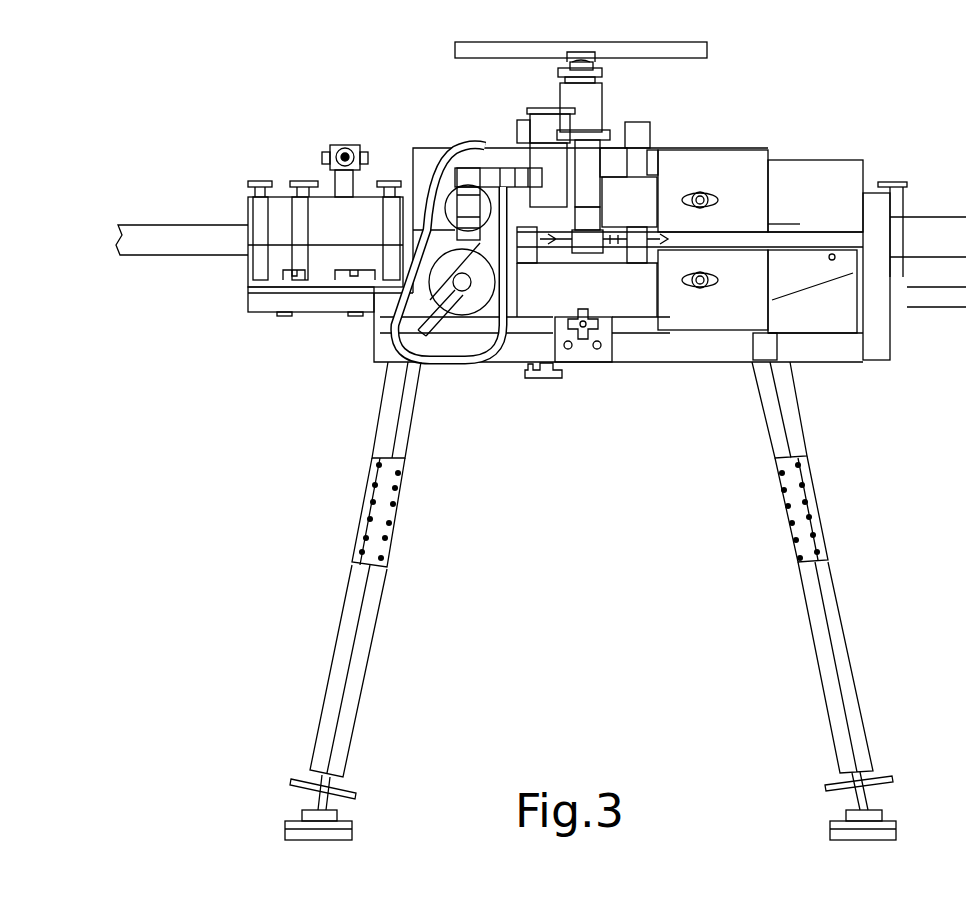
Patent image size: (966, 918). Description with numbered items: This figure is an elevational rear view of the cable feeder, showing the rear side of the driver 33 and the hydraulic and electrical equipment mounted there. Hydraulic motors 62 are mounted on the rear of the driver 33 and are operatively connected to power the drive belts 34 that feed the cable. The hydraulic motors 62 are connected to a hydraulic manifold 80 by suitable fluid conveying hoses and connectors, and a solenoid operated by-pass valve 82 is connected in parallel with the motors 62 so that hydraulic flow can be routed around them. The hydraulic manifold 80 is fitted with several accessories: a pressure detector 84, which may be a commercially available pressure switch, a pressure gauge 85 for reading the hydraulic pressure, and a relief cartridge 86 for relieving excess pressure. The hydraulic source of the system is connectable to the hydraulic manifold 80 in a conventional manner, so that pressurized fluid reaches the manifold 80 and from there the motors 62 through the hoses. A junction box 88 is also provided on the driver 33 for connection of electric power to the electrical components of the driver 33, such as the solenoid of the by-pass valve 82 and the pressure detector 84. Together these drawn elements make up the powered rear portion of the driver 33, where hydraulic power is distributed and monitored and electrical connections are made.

The driver 33 is at (748, 110).
The drive belts 34 is at (683, 232).
The hydraulic motors 62 is at (453, 327).
The hydraulic manifold 80 is at (550, 160).
The solenoid operated by-pass valve 82 is at (520, 153).
The pressure detector 84 is at (603, 157).
The pressure gauge 85 is at (533, 113).
The relief cartridge 86 is at (547, 225).
The junction box 88 is at (597, 260).